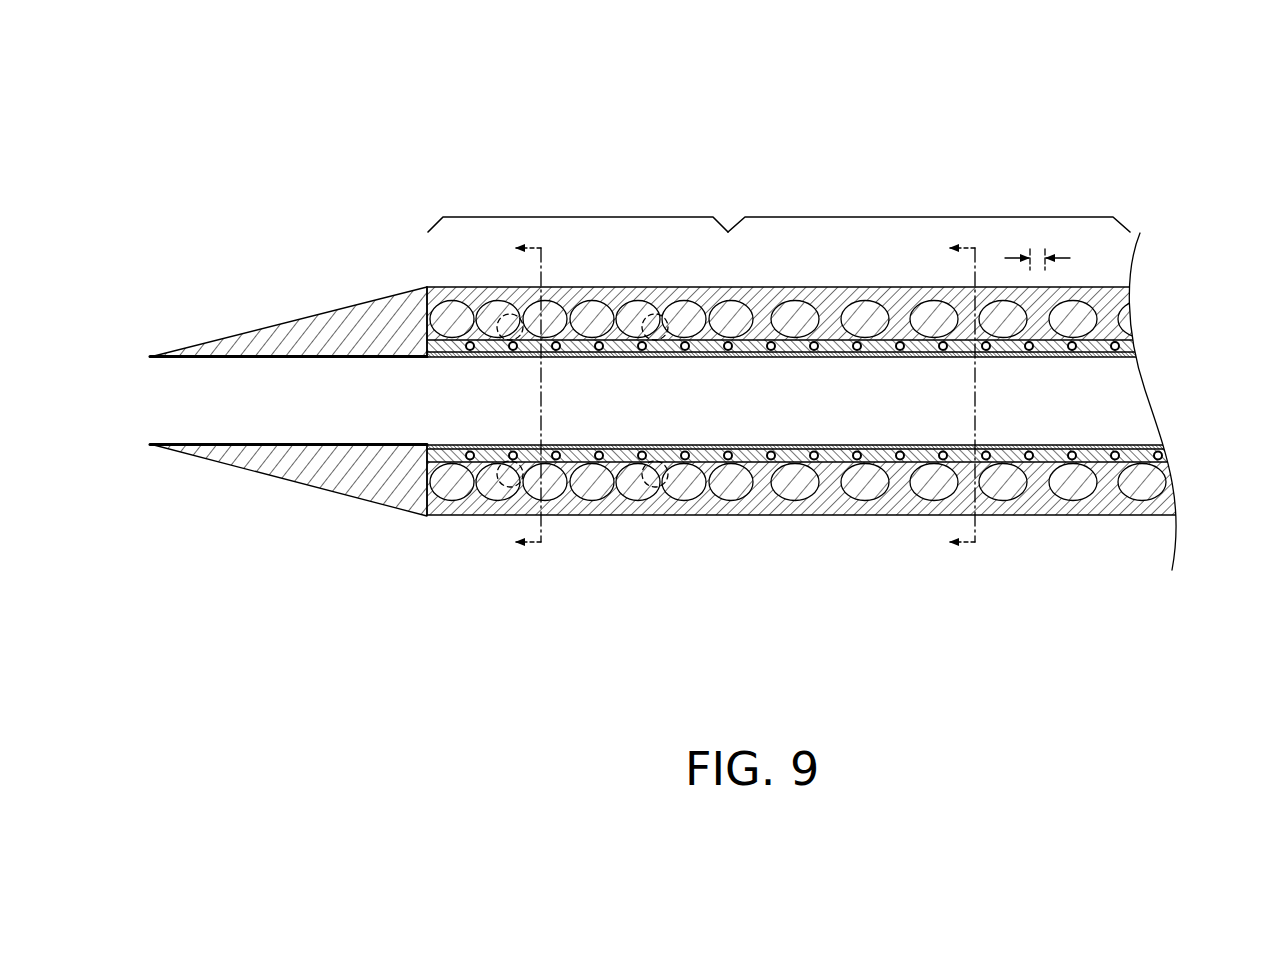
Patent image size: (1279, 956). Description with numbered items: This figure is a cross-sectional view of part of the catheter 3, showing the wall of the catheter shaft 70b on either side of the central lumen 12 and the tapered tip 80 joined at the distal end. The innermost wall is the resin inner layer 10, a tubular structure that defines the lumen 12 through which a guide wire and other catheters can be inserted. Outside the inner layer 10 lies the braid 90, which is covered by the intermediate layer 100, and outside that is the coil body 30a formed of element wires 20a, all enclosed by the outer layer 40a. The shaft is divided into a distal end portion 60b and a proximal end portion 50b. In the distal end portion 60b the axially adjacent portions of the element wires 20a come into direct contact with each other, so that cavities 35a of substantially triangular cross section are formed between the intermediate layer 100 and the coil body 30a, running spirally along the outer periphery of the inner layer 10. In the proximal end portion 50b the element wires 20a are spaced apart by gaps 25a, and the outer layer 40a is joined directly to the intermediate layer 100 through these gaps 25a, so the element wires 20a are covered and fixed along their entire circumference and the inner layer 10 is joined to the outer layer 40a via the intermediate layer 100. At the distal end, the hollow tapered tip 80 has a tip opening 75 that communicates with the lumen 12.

The catheter 3 is at (745, 146).
The inner layer 10 is at (1097, 360).
The lumen 12 is at (1125, 415).
The element wires 20a is at (1123, 318).
The gaps 25a is at (1037, 249).
The coil body 30a is at (1098, 490).
The cavities 35a is at (647, 357).
The outer layer 40a is at (1080, 288).
The proximal end portion 50b is at (926, 217).
The distal end portion 60b is at (565, 217).
The catheter shaft 70b is at (854, 287).
The tip opening 75 is at (178, 418).
The tip 80 is at (337, 322).
The braid 90 is at (1036, 490).
The intermediate layer 100 is at (1128, 345).